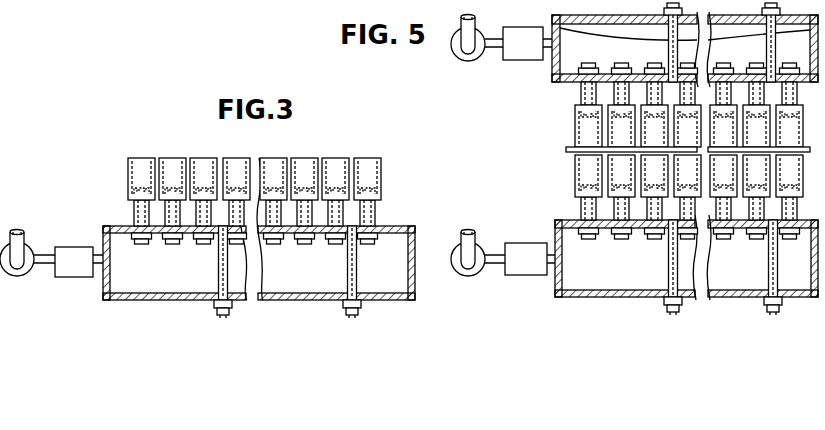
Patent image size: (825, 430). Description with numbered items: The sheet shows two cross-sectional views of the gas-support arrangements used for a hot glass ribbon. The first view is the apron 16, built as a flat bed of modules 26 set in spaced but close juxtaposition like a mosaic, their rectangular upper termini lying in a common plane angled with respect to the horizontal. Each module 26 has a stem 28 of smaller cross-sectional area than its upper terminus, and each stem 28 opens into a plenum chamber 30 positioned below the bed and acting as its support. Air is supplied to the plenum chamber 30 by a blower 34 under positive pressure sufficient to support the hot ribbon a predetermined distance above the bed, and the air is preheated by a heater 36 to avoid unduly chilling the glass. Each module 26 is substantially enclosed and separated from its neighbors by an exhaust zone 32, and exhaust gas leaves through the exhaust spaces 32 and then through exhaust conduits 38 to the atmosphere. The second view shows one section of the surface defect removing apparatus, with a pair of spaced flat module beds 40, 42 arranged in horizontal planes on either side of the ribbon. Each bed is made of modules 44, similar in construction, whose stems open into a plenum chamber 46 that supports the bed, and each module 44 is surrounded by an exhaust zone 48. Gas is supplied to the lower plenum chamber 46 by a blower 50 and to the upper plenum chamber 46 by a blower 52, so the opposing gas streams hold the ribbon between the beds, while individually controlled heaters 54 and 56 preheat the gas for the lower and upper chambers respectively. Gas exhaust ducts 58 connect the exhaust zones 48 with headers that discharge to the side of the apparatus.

In FIG. 3, the apron 16 is at (211, 231).
In FIG. 3, the modules 26 is at (272, 166).
In FIG. 3, the stem 28 is at (133, 209).
In FIG. 3, the plenum chamber 30 is at (157, 290).
In FIG. 3, the exhaust zone 32 is at (355, 162).
In FIG. 3, the blower 34 is at (25, 275).
In FIG. 3, the heater 36 is at (73, 277).
In FIG. 3, the exhaust conduits 38 is at (347, 268).
In FIG. 5, the module bed 40 is at (573, 178).
In FIG. 5, the module bed 42 is at (573, 124).
In FIG. 5, the modules 44 is at (580, 160).
In FIG. 5, the plenum chamber 46 is at (571, 63).
In FIG. 5, the exhaust zone 48 is at (607, 76).
In FIG. 5, the blower 50 is at (476, 272).
In FIG. 5, the blowers 52 is at (474, 55).
In FIG. 5, the heater 54 is at (527, 277).
In FIG. 5, the heater 56 is at (524, 55).
In FIG. 5, the gas exhaust ducts 58 is at (766, 48).